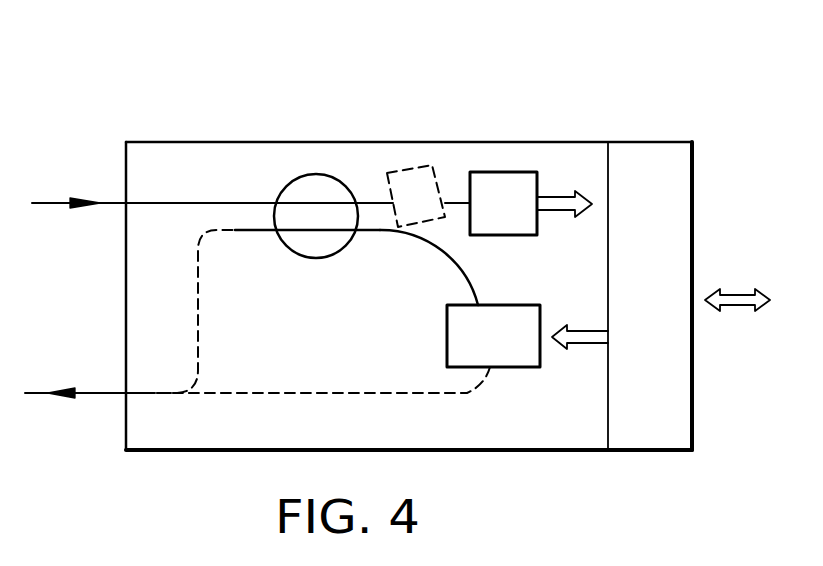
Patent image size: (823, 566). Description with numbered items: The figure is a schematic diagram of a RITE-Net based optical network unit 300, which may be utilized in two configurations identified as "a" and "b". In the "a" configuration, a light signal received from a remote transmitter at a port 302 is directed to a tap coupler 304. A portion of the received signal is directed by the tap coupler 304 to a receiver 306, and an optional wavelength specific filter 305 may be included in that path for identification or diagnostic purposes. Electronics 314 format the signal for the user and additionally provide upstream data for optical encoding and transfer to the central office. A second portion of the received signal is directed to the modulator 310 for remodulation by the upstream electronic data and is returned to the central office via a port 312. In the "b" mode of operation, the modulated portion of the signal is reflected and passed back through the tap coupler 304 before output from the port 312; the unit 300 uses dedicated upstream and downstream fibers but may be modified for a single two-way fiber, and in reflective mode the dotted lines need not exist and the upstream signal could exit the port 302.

The optical network unit 300 is at (658, 110).
The port 302 is at (126, 201).
The tap coupler 304 is at (310, 180).
The wavelength specific filter 305 is at (412, 165).
The receiver 306 is at (520, 172).
The modulator 310 is at (500, 313).
The port 312 is at (125, 391).
The electronics 314 is at (665, 240).